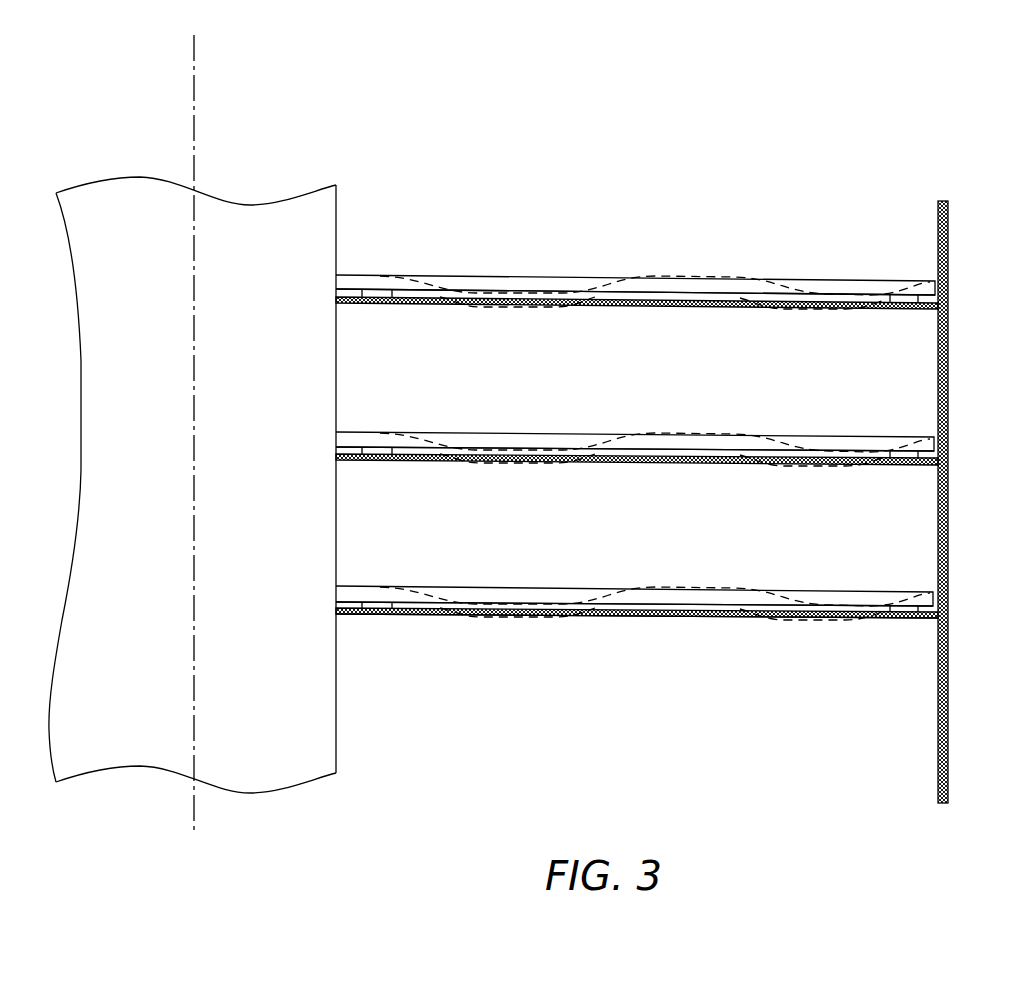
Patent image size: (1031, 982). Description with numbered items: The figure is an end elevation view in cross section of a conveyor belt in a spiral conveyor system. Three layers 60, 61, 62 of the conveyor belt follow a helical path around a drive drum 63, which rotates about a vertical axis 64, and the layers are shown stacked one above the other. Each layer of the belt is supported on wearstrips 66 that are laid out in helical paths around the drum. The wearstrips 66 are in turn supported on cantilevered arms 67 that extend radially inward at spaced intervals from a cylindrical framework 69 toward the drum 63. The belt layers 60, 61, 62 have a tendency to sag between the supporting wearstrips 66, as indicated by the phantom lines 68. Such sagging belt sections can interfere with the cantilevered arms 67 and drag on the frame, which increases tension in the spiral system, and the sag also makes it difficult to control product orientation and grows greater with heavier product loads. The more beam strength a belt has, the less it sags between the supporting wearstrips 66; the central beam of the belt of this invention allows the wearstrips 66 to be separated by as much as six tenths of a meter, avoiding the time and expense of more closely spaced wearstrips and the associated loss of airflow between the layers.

The belt layer 60 is at (927, 288).
The belt layer 61 is at (927, 446).
The belt layer 62 is at (927, 600).
The drive drum 63 is at (326, 206).
The vertical axis 64 is at (196, 47).
The wearstrips 66 is at (381, 296).
The cantilevered arms 67 is at (618, 615).
The phantom lines 68 is at (512, 308).
The cylindrical framework 69 is at (940, 353).